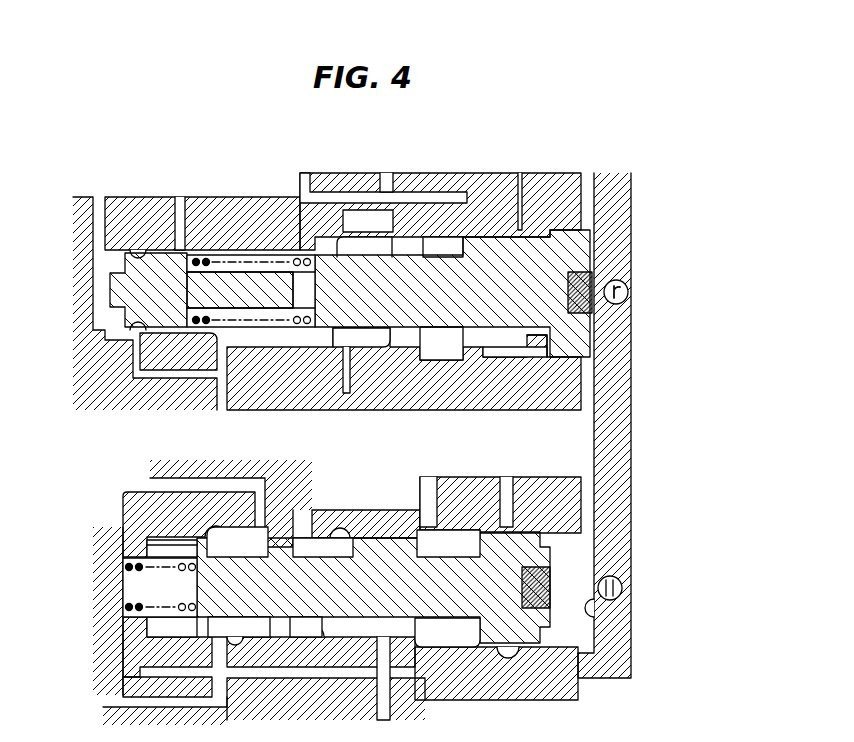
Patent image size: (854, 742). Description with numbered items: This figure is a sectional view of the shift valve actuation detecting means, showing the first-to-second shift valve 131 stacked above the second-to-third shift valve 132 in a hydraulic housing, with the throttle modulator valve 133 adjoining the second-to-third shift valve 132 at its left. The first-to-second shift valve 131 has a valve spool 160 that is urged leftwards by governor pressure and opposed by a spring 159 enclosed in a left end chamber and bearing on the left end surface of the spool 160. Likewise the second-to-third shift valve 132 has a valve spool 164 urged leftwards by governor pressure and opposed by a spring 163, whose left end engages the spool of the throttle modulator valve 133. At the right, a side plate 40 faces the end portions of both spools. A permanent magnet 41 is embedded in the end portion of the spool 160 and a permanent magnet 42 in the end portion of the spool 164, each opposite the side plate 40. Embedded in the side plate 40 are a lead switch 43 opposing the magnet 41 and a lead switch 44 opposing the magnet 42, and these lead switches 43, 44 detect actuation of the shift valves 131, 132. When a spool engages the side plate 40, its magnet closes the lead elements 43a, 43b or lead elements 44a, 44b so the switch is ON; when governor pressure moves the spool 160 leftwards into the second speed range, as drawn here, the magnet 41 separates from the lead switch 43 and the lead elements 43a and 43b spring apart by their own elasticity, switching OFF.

The side plate 40 is at (632, 430).
The permanent magnet 41 is at (535, 567).
The permanent magnet 42 is at (597, 262).
The lead switch 43 is at (622, 593).
The lead element 43a is at (592, 608).
The lead element 43b is at (621, 582).
The lead switch 44 is at (627, 296).
The lead element 44a is at (623, 283).
The lead element 44b is at (623, 283).
The 1-2 shift valve 131 is at (481, 490).
The 2-3 shift valve 132 is at (568, 148).
The throttle modulator valve 133 is at (146, 202).
The spring 159 is at (147, 605).
The valve spool 160 is at (497, 633).
The spring 163 is at (238, 255).
The valve spool 164 is at (502, 352).